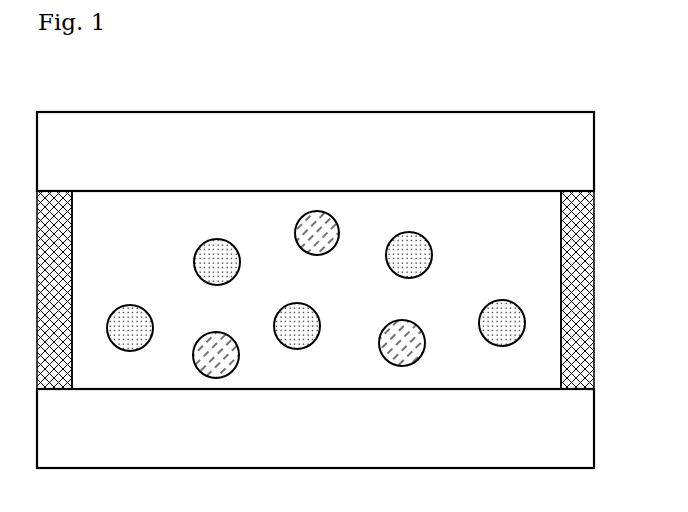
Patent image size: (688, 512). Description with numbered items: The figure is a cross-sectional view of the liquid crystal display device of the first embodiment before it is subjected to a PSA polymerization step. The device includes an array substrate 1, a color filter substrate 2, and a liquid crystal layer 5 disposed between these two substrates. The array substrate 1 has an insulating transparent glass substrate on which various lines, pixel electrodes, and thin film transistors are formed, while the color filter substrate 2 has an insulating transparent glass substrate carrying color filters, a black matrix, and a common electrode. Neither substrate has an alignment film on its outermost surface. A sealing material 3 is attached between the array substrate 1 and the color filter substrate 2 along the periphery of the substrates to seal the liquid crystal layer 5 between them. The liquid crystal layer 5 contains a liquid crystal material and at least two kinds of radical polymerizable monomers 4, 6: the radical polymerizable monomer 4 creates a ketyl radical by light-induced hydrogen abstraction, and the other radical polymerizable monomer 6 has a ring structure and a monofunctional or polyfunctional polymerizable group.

The array substrate 1 is at (578, 441).
The color filter substrate 2 is at (578, 143).
The sealing material 3 is at (579, 279).
The radical polymerizable monomer 4 is at (410, 235).
The liquid crystal layer 5 is at (134, 222).
The radical polymerizable monomer 6 is at (318, 220).